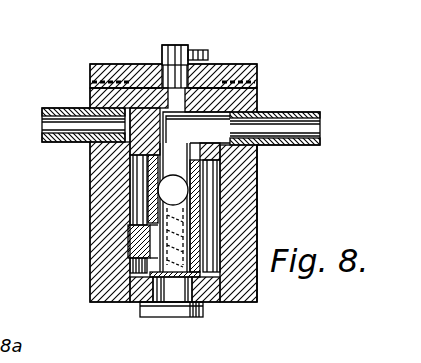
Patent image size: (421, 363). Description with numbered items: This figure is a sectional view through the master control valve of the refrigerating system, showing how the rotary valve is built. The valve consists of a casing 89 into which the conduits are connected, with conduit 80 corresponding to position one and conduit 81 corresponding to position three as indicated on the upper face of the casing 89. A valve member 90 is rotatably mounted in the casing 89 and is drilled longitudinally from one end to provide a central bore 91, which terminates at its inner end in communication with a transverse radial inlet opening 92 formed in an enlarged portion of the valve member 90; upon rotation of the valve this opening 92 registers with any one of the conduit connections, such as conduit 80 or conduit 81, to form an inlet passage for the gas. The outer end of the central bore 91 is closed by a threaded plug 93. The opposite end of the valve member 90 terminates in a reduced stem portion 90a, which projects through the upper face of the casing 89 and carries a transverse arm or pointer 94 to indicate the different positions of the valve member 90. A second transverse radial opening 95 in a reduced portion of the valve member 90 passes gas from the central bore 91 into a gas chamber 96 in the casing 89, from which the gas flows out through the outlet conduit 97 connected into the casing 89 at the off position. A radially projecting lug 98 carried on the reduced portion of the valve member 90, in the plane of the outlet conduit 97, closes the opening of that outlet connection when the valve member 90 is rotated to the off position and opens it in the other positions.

The conduit 80 is at (73, 101).
The conduit 81 is at (300, 112).
The casing 89 is at (251, 199).
The valve member 90 is at (90, 150).
The reduced stem portion 90a is at (171, 57).
The central bore 91 is at (235, 166).
The transverse radial inlet opening 92 is at (196, 127).
The threaded plug 93 is at (176, 313).
The transverse arm or pointer 94 is at (122, 63).
The second transverse radial opening 95 is at (172, 190).
The gas chamber 96 is at (122, 208).
The outlet conduit 97 is at (185, 237).
The radially projecting lug 98 is at (125, 243).